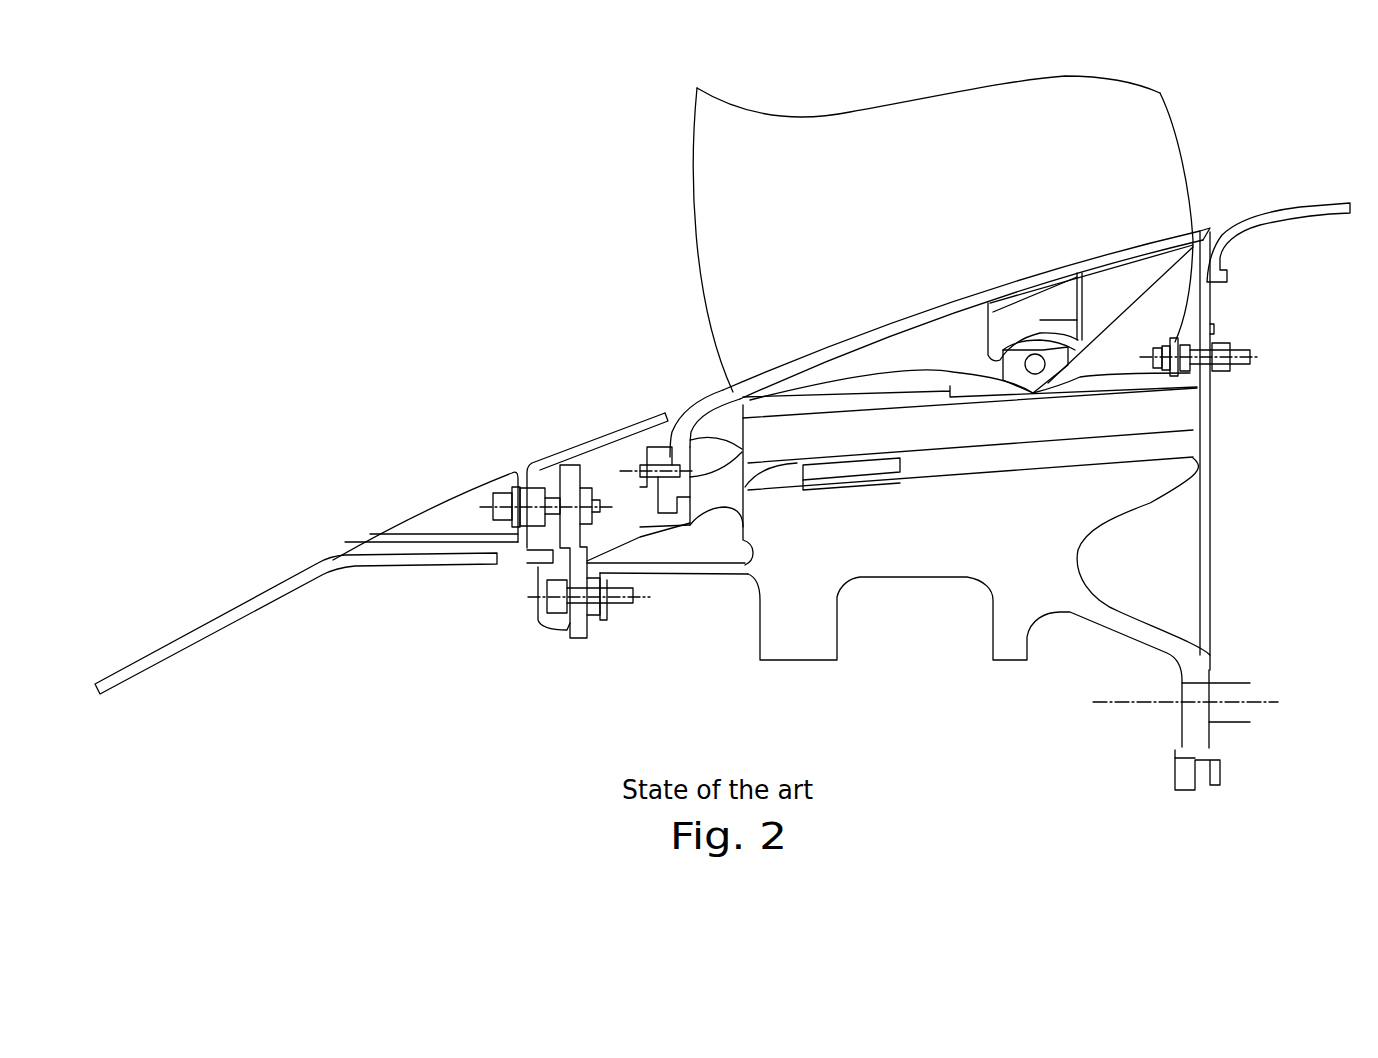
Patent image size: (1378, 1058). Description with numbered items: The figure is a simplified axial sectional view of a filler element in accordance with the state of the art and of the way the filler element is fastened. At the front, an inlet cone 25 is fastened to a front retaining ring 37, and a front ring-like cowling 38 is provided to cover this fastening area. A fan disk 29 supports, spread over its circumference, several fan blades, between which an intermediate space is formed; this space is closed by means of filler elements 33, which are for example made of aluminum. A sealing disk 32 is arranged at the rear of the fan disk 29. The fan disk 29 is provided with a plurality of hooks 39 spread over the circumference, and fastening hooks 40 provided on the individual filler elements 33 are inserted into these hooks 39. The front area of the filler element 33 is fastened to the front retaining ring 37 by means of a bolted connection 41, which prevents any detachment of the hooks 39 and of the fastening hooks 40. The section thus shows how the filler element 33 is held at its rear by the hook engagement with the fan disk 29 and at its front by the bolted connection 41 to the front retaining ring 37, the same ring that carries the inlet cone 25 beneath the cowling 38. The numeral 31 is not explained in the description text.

The inlet cone 25 is at (293, 598).
The fan disk 29 is at (892, 580).
The blade 31 is at (738, 262).
The sealing disk 32 is at (1232, 256).
The filler element 33 is at (793, 368).
The front retaining ring 37 is at (560, 555).
The front ring-like cowling 38 is at (568, 446).
The hook 39 is at (1090, 370).
The fastening hook 40 is at (1020, 368).
The bolted connection 41 is at (575, 640).